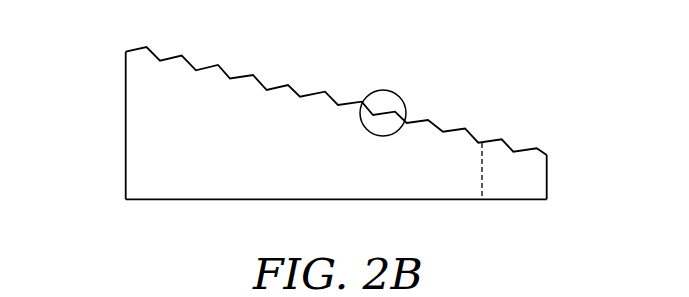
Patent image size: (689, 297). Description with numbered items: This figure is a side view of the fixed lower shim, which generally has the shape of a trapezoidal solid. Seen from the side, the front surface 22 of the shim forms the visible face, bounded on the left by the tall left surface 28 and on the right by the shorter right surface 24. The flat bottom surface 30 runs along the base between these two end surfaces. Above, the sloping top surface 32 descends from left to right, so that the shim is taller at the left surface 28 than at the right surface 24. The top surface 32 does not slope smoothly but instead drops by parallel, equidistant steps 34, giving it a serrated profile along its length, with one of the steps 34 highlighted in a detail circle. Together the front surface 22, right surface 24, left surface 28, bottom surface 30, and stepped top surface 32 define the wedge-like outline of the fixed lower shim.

The front surface 22 is at (242, 173).
The right surface 24 is at (547, 172).
The left surface 28 is at (126, 122).
The bottom surface 30 is at (408, 185).
The sloping top surface 32 is at (231, 77).
The steps 34 is at (396, 91).